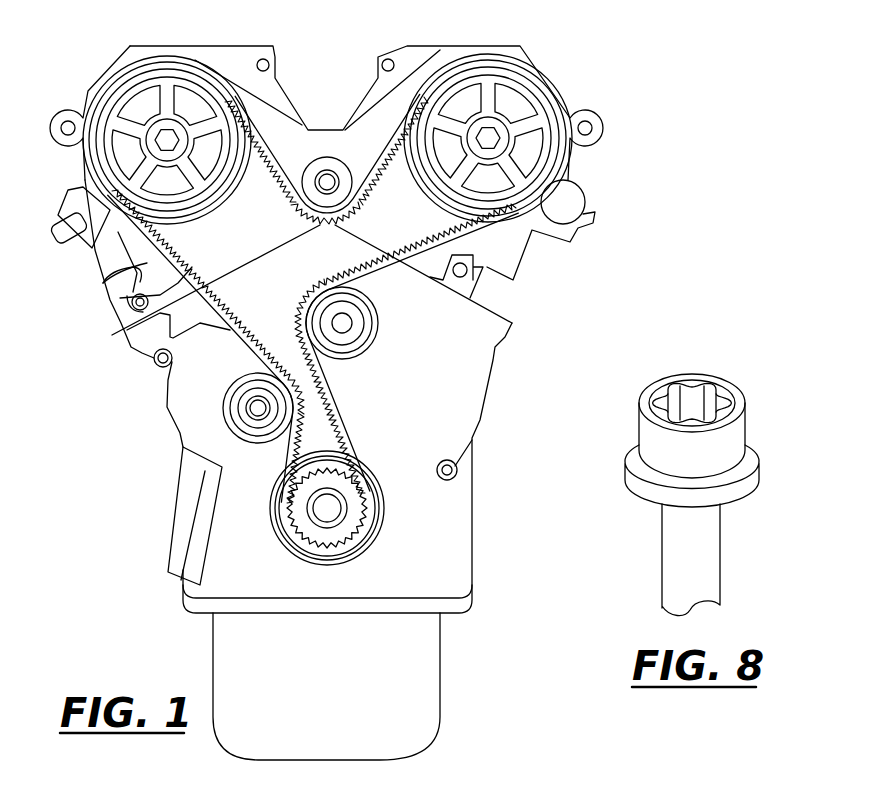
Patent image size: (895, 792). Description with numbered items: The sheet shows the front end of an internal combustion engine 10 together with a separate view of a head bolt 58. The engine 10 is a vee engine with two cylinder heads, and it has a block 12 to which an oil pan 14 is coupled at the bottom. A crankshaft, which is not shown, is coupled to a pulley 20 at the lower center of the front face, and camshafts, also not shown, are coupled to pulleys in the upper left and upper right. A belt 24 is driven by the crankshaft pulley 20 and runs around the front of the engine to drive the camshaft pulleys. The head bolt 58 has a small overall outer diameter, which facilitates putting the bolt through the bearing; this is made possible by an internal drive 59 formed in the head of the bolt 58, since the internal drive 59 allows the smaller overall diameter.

In FIG. 1, the internal combustion engine 10 is at (328, 403).
In FIG. 1, the block 12 is at (450, 510).
In FIG. 1, the oil pan 14 is at (335, 699).
In FIG. 1, the crankshaft pulley 20 is at (322, 510).
In FIG. 1, the belt 24 is at (140, 296).
In FIG. 8, the head bolt 58 is at (733, 490).
In FIG. 8, the internal drive 59 is at (690, 413).